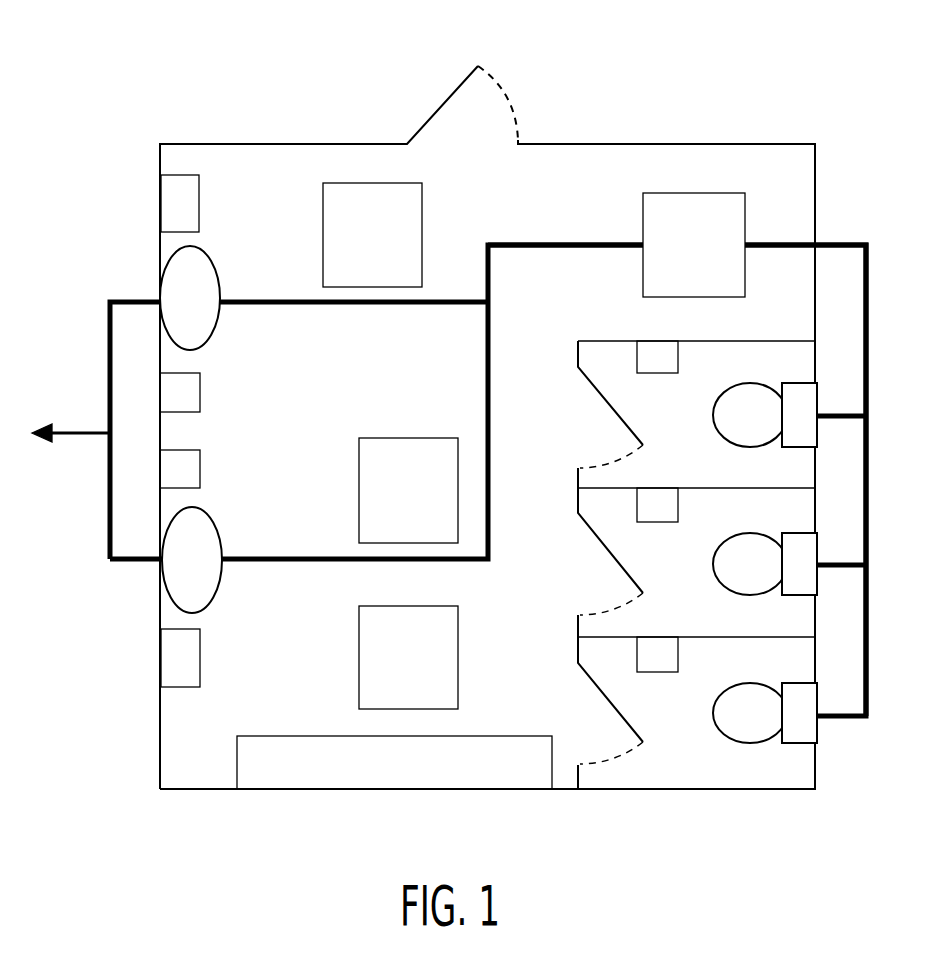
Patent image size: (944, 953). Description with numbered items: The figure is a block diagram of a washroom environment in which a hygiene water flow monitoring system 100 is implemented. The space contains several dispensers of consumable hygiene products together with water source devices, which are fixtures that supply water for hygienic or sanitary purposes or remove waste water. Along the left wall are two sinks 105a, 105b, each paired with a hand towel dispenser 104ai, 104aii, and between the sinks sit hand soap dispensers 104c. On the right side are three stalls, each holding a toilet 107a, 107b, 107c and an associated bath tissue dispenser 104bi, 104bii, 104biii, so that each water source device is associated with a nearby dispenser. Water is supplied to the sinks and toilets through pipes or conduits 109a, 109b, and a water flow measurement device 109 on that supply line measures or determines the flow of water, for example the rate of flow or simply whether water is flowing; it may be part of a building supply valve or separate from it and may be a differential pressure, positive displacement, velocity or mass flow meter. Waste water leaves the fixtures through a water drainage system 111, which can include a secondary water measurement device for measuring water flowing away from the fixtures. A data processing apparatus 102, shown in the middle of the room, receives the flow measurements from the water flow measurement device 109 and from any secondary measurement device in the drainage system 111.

The hygiene water flow monitoring system 100 is at (716, 85).
The data processing apparatus 102 is at (427, 501).
The hand towel dispenser 104ai is at (200, 657).
The hand towel dispenser 104aii is at (200, 197).
The bath tissue dispenser 104bi is at (660, 373).
The bath tissue dispenser 104bii is at (660, 522).
The bath tissue dispenser 104biii is at (662, 672).
The hand soap dispenser 104c is at (200, 472).
The sink 105a is at (222, 535).
The sink 105b is at (220, 327).
The toilet 107a is at (777, 425).
The toilet 107b is at (777, 575).
The toilet 107c is at (777, 725).
The water flow measurement device 109 is at (713, 251).
The conduit 109a is at (837, 243).
The conduit 109b is at (568, 242).
The water drainage system 111 is at (108, 495).